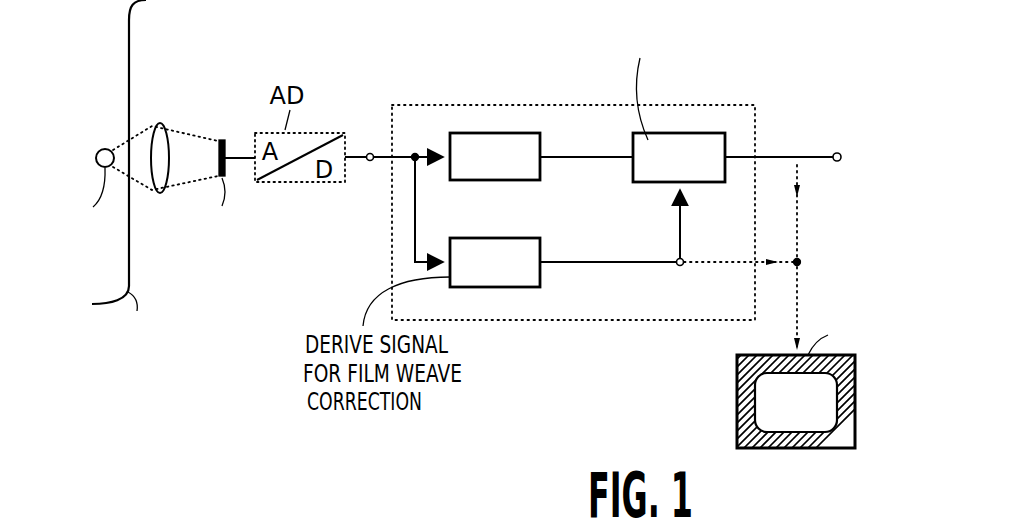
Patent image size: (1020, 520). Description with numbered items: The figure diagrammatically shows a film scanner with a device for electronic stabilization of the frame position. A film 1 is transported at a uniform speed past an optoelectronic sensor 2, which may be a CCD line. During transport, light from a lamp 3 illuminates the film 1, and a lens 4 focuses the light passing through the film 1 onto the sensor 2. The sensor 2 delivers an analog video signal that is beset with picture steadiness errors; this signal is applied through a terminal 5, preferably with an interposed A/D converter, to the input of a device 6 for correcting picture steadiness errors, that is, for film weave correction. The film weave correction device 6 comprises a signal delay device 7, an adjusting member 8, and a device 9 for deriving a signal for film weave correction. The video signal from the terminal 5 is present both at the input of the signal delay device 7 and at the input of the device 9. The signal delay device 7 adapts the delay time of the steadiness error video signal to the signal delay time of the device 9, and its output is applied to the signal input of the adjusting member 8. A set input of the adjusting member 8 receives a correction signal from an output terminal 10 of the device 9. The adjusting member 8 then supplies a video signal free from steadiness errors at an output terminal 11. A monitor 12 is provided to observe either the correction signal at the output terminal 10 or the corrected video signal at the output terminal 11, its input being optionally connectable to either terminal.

The film 1 is at (131, 247).
The optoelectronic sensor 2 is at (222, 140).
The lamp 3 is at (105, 148).
The lens 4 is at (160, 125).
The terminal 5 is at (370, 153).
The device for correcting picture steadiness errors 6 is at (410, 122).
The signal delay device 7 is at (503, 148).
The adjusting member 8 is at (657, 145).
The device for deriving a signal for film weave correction 9 is at (512, 252).
The output terminal 10 is at (683, 266).
The output terminal 11 is at (841, 158).
The monitor 12 is at (737, 400).